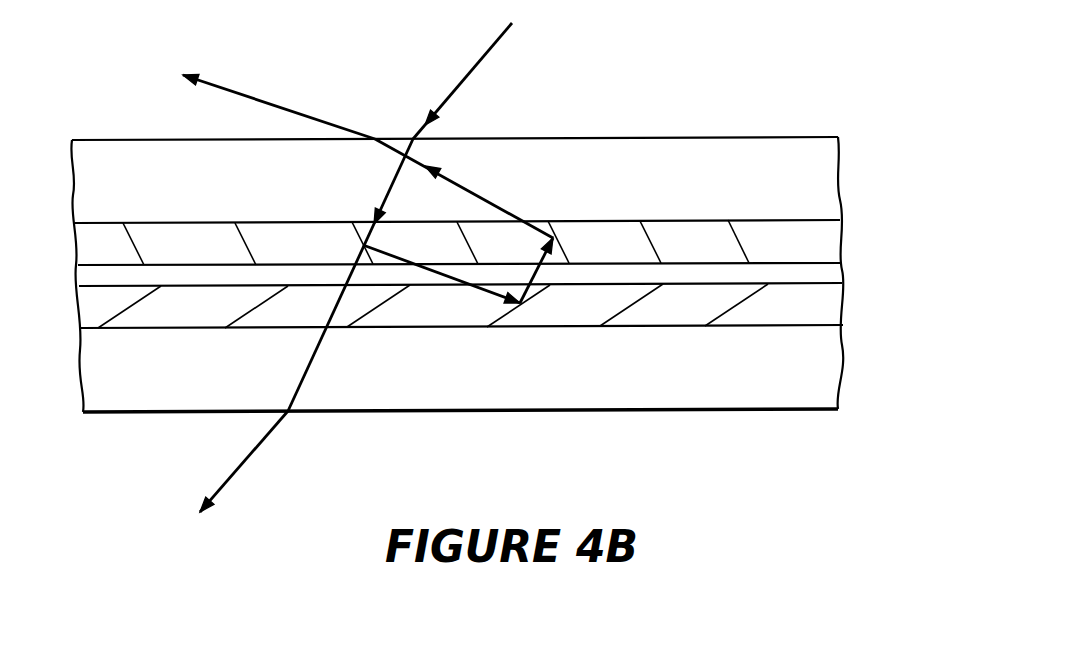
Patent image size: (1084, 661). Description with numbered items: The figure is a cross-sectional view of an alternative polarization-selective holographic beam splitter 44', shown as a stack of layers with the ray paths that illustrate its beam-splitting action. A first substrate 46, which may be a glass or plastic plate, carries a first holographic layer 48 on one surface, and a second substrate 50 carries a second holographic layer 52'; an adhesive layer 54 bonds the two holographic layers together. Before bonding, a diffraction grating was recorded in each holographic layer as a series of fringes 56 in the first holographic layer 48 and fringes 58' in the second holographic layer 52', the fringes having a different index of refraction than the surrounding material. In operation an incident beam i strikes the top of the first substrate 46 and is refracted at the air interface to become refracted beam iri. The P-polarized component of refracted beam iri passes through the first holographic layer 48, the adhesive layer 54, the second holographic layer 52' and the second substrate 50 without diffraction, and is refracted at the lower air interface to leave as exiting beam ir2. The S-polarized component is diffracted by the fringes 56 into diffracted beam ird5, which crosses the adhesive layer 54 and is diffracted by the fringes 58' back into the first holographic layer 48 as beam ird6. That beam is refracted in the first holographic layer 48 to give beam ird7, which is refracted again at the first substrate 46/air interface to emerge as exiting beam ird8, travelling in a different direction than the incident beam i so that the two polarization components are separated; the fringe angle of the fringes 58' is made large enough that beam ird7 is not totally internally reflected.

The beam splitter 44' is at (508, 213).
The first substrate 46 is at (837, 185).
The first holographic layer 48 is at (506, 216).
The adhesive layer 54 is at (842, 278).
The second holographic layer 52' is at (512, 334).
The second substrate 50 is at (840, 367).
The fringes 56 is at (743, 245).
The fringes 58' is at (448, 334).
The incident beam i is at (497, 44).
The refracted beam iri is at (388, 178).
The exiting beam ir2 is at (252, 455).
The diffracted beam ird5 is at (478, 290).
The diffracted beam ird6 is at (545, 267).
The refracted beam ird7 is at (483, 198).
The exiting beam ird8 is at (277, 107).